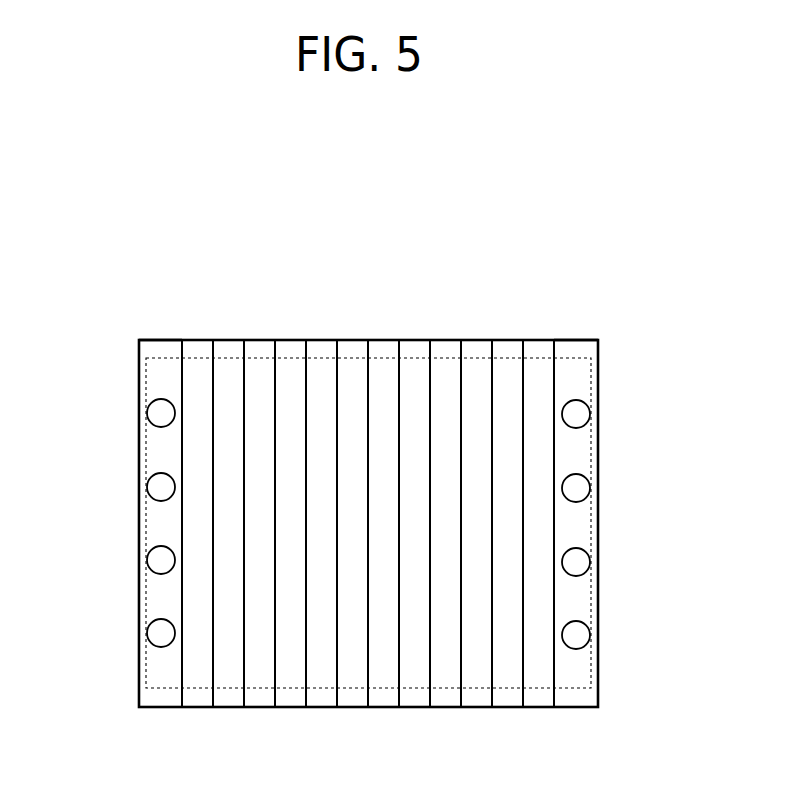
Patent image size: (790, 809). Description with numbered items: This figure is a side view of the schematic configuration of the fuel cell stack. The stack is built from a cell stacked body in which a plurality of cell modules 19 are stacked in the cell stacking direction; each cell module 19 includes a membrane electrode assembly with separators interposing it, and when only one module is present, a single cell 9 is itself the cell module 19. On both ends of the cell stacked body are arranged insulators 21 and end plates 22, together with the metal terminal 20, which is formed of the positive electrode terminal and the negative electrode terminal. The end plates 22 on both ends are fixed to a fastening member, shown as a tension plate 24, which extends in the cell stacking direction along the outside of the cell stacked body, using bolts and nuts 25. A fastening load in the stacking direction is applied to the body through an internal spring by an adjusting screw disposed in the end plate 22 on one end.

The cell 9 is at (600, 563).
The cell module 19 is at (262, 350).
The metal terminal 20 is at (228, 348).
The insulator 21 is at (197, 348).
The end plate 22 is at (147, 350).
The tension plate 24 is at (147, 458).
The bolts and nuts 25 is at (160, 413).